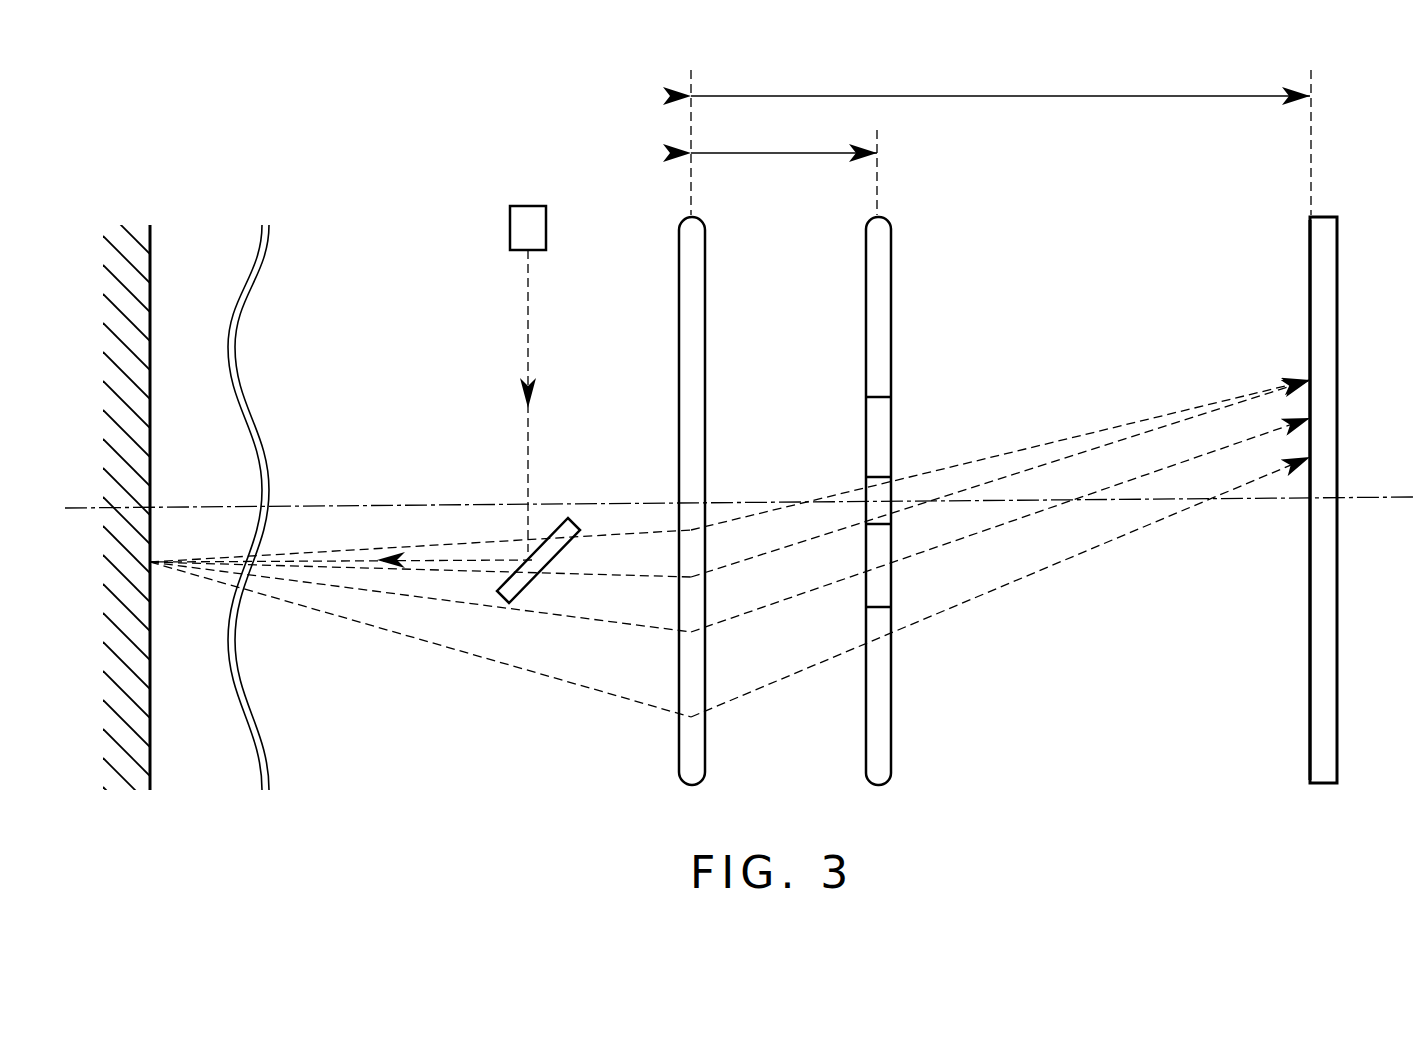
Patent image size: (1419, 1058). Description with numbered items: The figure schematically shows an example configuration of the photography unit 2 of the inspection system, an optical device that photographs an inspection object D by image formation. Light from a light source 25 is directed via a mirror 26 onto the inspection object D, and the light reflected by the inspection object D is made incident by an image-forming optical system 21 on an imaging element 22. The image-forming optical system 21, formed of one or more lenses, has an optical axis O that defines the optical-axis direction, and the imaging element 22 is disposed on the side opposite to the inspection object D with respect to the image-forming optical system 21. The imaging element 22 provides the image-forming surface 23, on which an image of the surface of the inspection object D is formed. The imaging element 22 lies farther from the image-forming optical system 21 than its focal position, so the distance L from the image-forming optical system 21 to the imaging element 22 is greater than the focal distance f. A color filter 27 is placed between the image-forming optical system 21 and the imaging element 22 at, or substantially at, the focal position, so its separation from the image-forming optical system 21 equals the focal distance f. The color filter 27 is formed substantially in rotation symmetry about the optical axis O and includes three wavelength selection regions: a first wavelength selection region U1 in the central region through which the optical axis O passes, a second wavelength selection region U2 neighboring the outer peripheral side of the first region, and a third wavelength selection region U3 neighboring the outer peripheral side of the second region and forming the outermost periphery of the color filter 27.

The photography unit 2 is at (460, 126).
The image-forming optical system 21 is at (710, 261).
The imaging element 22 is at (1336, 257).
The image-forming surface 23 is at (1310, 305).
The light source 25 is at (546, 228).
The mirror 26 is at (548, 562).
The color filter 27 is at (895, 261).
The inspection object D is at (132, 232).
The first wavelength selection region U1 is at (880, 490).
The second wavelength selection region U2 is at (883, 412).
The third wavelength selection region U3 is at (883, 302).
The optical axis O is at (1380, 500).
The distance from image-forming optical system to imaging element L is at (1000, 80).
The focal distance f is at (784, 136).